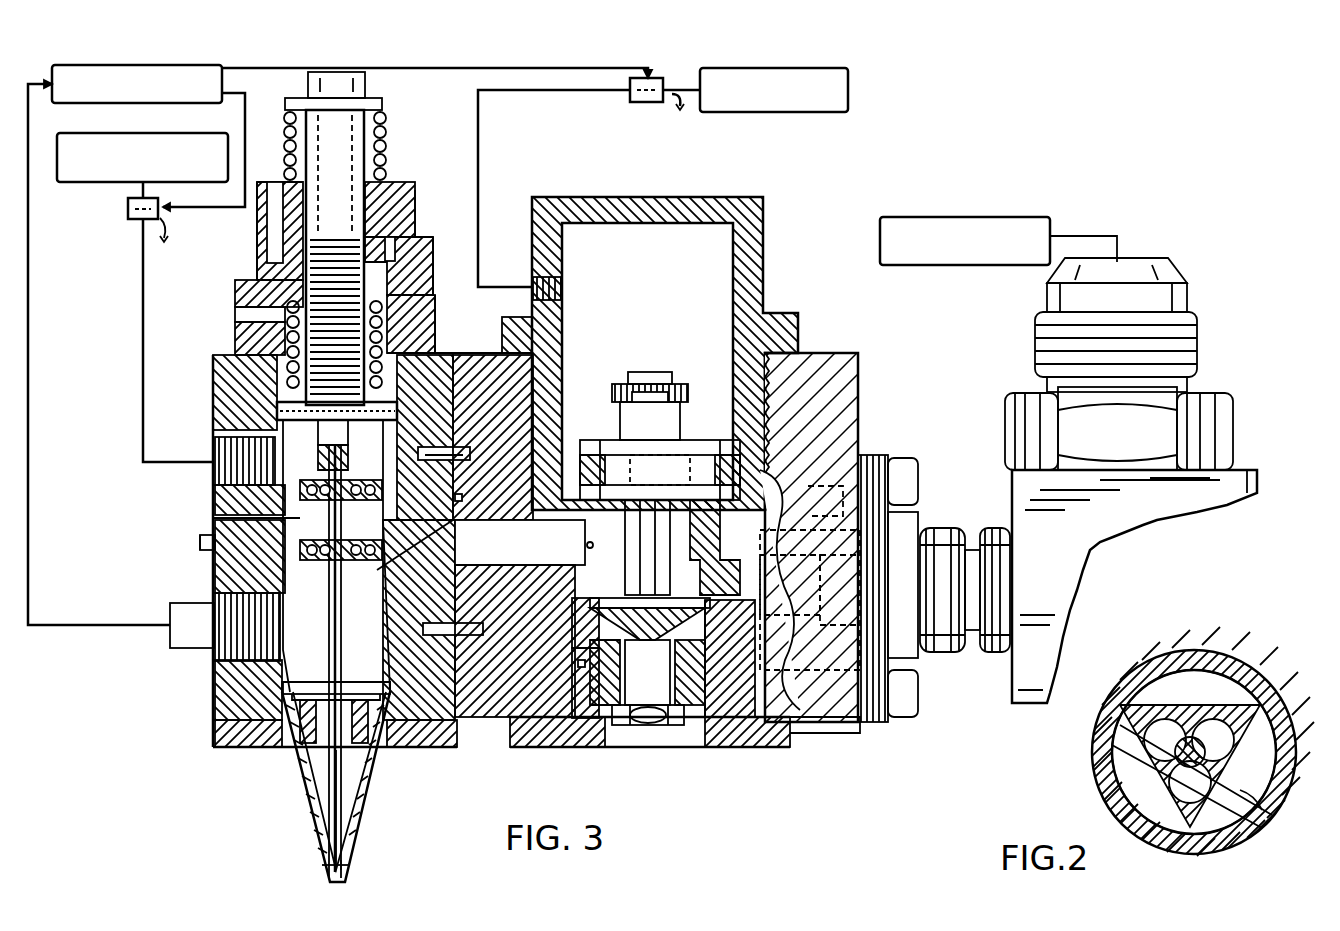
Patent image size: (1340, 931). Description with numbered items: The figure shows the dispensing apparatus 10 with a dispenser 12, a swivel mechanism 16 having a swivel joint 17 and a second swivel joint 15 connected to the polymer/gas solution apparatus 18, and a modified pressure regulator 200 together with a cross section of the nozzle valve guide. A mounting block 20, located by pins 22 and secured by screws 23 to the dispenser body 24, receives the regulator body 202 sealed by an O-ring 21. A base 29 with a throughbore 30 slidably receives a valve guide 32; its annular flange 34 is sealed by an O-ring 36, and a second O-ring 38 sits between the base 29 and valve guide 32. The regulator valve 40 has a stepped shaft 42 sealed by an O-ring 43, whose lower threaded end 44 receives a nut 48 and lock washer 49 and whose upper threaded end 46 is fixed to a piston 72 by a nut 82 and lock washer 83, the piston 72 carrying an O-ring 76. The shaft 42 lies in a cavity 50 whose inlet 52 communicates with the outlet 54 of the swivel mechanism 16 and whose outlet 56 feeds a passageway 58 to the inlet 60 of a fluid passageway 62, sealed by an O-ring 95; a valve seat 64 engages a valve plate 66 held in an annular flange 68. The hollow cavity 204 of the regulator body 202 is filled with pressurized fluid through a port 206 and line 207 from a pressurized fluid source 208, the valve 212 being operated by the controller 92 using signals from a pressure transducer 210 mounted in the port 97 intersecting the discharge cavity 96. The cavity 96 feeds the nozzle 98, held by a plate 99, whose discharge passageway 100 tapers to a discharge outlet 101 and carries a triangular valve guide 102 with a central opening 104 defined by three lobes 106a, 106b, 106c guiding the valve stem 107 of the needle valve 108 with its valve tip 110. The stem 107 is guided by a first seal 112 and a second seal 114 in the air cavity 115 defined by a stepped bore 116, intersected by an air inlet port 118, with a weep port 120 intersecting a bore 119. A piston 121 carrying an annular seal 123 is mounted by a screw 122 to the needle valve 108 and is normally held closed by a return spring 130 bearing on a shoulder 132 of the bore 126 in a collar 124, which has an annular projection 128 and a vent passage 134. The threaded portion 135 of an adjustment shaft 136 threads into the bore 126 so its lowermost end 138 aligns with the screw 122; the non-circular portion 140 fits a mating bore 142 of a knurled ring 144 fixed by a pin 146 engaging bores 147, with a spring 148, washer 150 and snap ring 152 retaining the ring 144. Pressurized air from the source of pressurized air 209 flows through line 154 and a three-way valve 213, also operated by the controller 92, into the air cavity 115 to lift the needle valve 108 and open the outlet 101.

In FIG. 3, the dispensing apparatus 10 is at (1018, 190).
In FIG. 3, the dispenser 12 is at (200, 539).
In FIG. 3, the second swivel joint 15 is at (934, 588).
In FIG. 3, the swivel mechanism 16 is at (1134, 586).
In FIG. 3, the swivel joint 17 is at (1141, 364).
In FIG. 3, the polymer/gas solution apparatus 18 is at (998, 219).
In FIG. 3, the mounting block 20 is at (838, 537).
In FIG. 3, the O-ring 21 is at (808, 571).
In FIG. 3, the pins 22 is at (439, 537).
In FIG. 3, the screws 23 is at (170, 565).
In FIG. 3, the dispenser body 24 is at (190, 551).
In FIG. 3, the base 29 is at (661, 762).
In FIG. 3, the throughbore 30 is at (652, 717).
In FIG. 3, the valve guide 32 is at (748, 658).
In FIG. 3, the annular flange 34 is at (825, 741).
In FIG. 3, the O-ring 36 is at (747, 765).
In FIG. 3, the second O-ring 38 is at (773, 658).
In FIG. 3, the regulator valve 40 is at (665, 570).
In FIG. 3, the stepped shaft 42 is at (627, 547).
In FIG. 3, the O-ring 43 is at (585, 716).
In FIG. 3, the lower threaded end 44 is at (648, 754).
In FIG. 3, the upper threaded end 46 is at (637, 359).
In FIG. 3, the nut 48 is at (644, 770).
In FIG. 3, the lock washer 49 is at (689, 769).
In FIG. 3, the cavity 50 is at (810, 578).
In FIG. 3, the inlet 52 is at (789, 585).
In FIG. 3, the outlet 54 is at (836, 590).
In FIG. 3, the outlet 56 is at (524, 542).
In FIG. 3, the passageway 58 is at (481, 656).
In FIG. 3, the inlet 60 is at (493, 437).
In FIG. 3, the fluid passageway 62 is at (419, 526).
In FIG. 3, the valve seat 64 is at (562, 623).
In FIG. 3, the valve plate 66 is at (562, 673).
In FIG. 3, the annular flange 68 is at (557, 706).
In FIG. 3, the piston 72 is at (660, 448).
In FIG. 3, the O-ring 76 is at (654, 442).
In FIG. 3, the nut 82 is at (655, 386).
In FIG. 3, the lock washer 83 is at (621, 385).
In FIG. 3, the controller 92 is at (340, 345).
In FIG. 3, the O-ring 95 is at (470, 455).
In FIG. 3, the discharge cavity 96 is at (235, 556).
In FIG. 3, the port 97 is at (336, 556).
In FIG. 3, the nozzle 98 is at (287, 787).
In FIG. 2, the nozzle 98 is at (1203, 727).
In FIG. 3, the plate 99 is at (311, 727).
In FIG. 2, the plate 99 is at (1194, 717).
In FIG. 3, the discharge passageway 100 is at (390, 810).
In FIG. 2, the discharge passageway 100 is at (1265, 827).
In FIG. 3, the discharge outlet 101 is at (382, 870).
In FIG. 3, the valve guide 102 is at (312, 739).
In FIG. 2, the valve guide 102 is at (1190, 661).
In FIG. 3, the central opening 104 is at (364, 733).
In FIG. 2, the central opening 104 is at (1113, 746).
In FIG. 2, the lobe 106a is at (1190, 751).
In FIG. 2, the lobe 106b is at (1127, 750).
In FIG. 2, the lobe 106c is at (1116, 797).
In FIG. 3, the valve stem 107 is at (360, 661).
In FIG. 2, the valve stem 107 is at (1148, 776).
In FIG. 3, the needle valve 108 is at (393, 841).
In FIG. 3, the valve tip 110 is at (294, 865).
In FIG. 3, the first seal 112 is at (349, 538).
In FIG. 3, the second seal 114 is at (356, 469).
In FIG. 3, the air cavity 115 is at (225, 496).
In FIG. 3, the stepped bore 116 is at (218, 390).
In FIG. 3, the air inlet port 118 is at (217, 457).
In FIG. 3, the bore 119 is at (324, 527).
In FIG. 3, the weep port 120 is at (187, 531).
In FIG. 3, the piston 121 is at (460, 335).
In FIG. 3, the screw 122 is at (433, 298).
In FIG. 3, the annular seal 123 is at (314, 422).
In FIG. 3, the collar 124 is at (234, 286).
In FIG. 3, the bore 126 is at (222, 338).
In FIG. 3, the annular projection 128 is at (460, 322).
In FIG. 3, the return spring 130 is at (448, 248).
In FIG. 3, the shoulder 132 is at (420, 236).
In FIG. 3, the vent passage 134 is at (222, 311).
In FIG. 3, the threaded portion 135 is at (237, 231).
In FIG. 3, the adjustment shaft 136 is at (410, 188).
In FIG. 3, the lowermost end 138 is at (307, 344).
In FIG. 3, the non-circular portion 140 is at (388, 257).
In FIG. 3, the mating bore 142 is at (475, 190).
In FIG. 3, the knurled ring 144 is at (465, 219).
In FIG. 3, the pin 146 is at (222, 201).
In FIG. 3, the bores 147 is at (254, 231).
In FIG. 3, the spring 148 is at (358, 145).
In FIG. 3, the washer 150 is at (367, 99).
In FIG. 3, the snap ring 152 is at (362, 84).
In FIG. 3, the line 154 is at (110, 440).
In FIG. 3, the modified pressure regulator 200 is at (774, 124).
In FIG. 3, the regulator body 202 is at (683, 353).
In FIG. 3, the hollow cavity 204 is at (647, 361).
In FIG. 3, the port 206 is at (576, 276).
In FIG. 3, the line 207 is at (554, 188).
In FIG. 3, the pressurized fluid source 208 is at (770, 117).
In FIG. 3, the source of pressurized air 209 is at (141, 191).
In FIG. 3, the pressure transducer 210 is at (214, 658).
In FIG. 3, the valve 212 is at (650, 114).
In FIG. 3, the three-way valve 213 is at (151, 322).